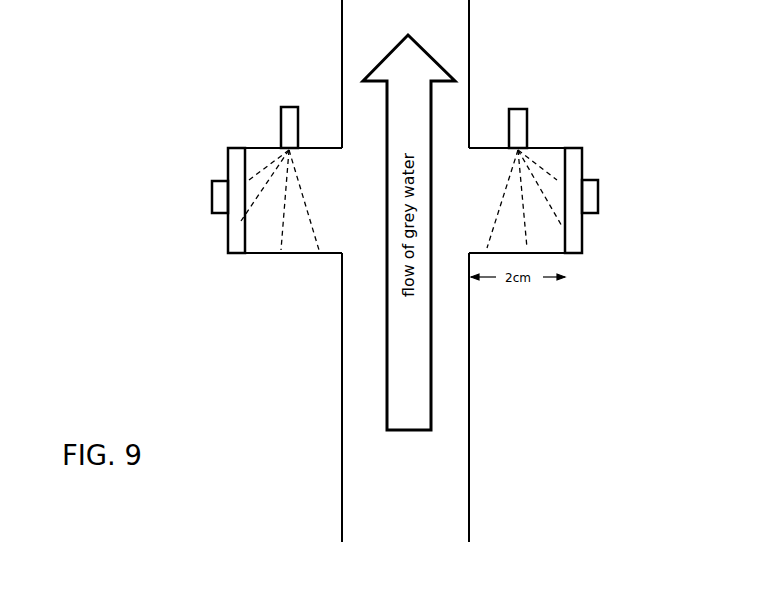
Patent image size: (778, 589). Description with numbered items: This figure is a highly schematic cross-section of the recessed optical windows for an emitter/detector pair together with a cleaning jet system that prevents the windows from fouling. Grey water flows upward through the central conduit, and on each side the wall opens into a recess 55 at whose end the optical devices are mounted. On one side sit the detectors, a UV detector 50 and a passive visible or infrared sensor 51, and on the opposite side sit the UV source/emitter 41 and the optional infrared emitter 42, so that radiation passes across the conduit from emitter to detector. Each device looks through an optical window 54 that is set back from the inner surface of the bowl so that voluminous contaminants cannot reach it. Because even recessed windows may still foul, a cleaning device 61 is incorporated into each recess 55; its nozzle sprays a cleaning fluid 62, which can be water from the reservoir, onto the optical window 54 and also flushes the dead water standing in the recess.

The UV source/emitter 41 is at (656, 196).
The infrared emitter 42 is at (590, 196).
The UV detector 50 is at (165, 197).
The passive visible or infrared sensor 51 is at (212, 199).
The optical window 54 is at (578, 228).
The recess 55 is at (307, 255).
The cleaning device 61 is at (251, 140).
The cleaning fluid 62 is at (552, 171).